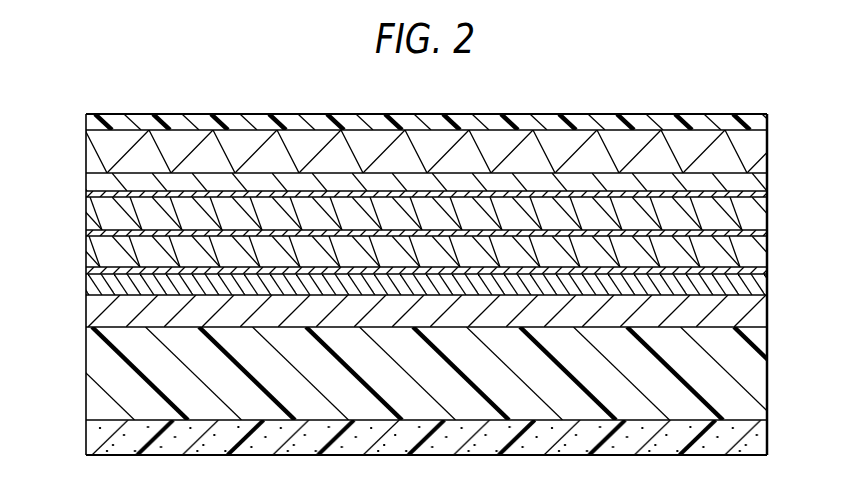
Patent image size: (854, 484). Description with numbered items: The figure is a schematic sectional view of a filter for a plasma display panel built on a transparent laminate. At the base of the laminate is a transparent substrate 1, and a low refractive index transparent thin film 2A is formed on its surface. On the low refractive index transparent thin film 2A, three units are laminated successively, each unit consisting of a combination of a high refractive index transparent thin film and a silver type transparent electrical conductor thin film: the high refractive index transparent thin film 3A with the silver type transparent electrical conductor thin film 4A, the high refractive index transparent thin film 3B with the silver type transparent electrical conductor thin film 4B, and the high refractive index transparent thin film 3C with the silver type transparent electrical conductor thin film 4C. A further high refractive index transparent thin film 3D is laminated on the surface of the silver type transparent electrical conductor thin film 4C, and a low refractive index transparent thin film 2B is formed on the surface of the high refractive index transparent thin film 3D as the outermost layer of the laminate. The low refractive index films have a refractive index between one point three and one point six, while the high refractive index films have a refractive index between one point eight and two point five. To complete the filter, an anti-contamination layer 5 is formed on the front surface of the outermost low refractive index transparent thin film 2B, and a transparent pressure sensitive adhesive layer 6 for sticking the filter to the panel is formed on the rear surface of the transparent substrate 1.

The transparent substrate 1 is at (86, 375).
The low refractive index transparent thin film 2A is at (767, 315).
The low refractive index transparent thin film 2B is at (86, 157).
The high refractive index transparent thin film 3A is at (767, 283).
The high refractive index transparent thin film 3B is at (767, 245).
The high refractive index transparent thin film 3C is at (767, 210).
The high refractive index transparent thin film 3D is at (767, 181).
The silver type transparent electrical conductor thin film 4A is at (86, 272).
The silver type transparent electrical conductor thin film 4B is at (86, 235).
The silver type transparent electrical conductor thin film 4C is at (86, 197).
The anti-contamination layer 5 is at (767, 121).
The transparent pressure sensitive adhesive layer 6 is at (767, 436).